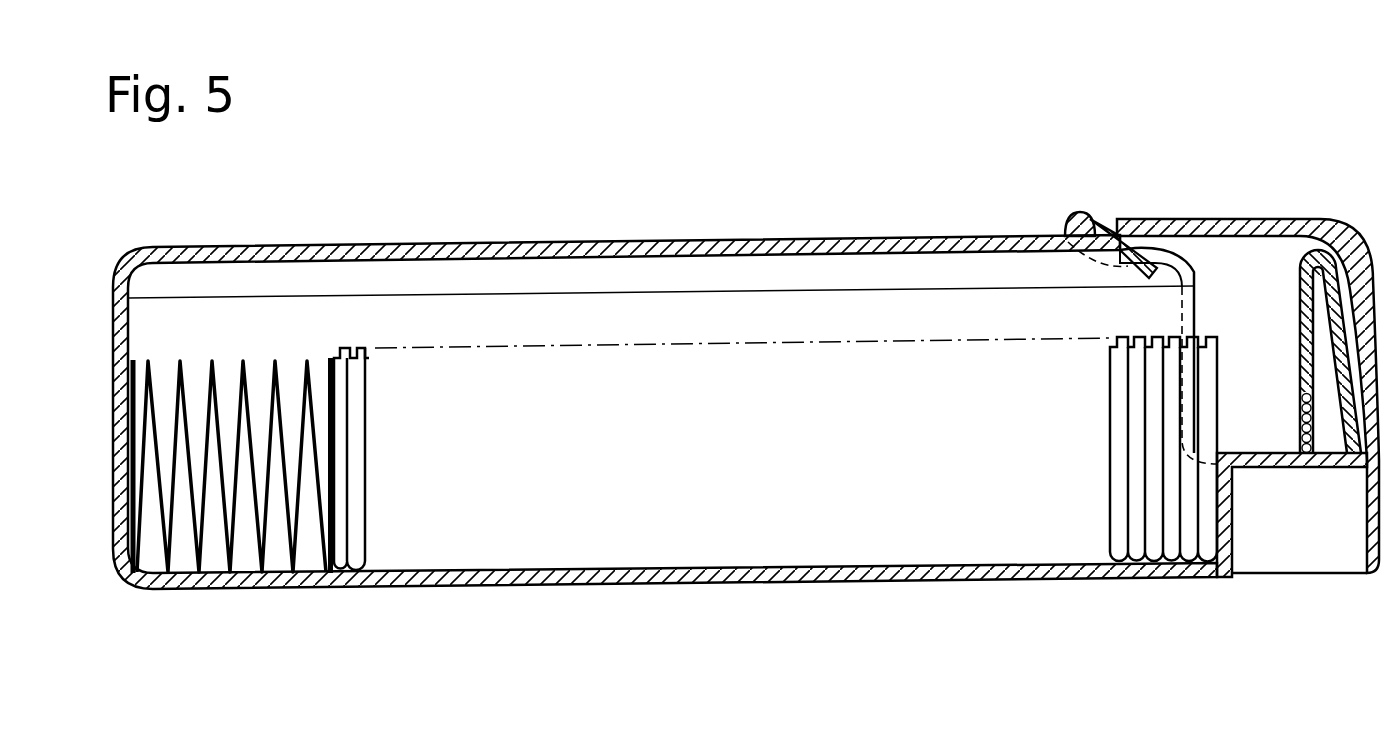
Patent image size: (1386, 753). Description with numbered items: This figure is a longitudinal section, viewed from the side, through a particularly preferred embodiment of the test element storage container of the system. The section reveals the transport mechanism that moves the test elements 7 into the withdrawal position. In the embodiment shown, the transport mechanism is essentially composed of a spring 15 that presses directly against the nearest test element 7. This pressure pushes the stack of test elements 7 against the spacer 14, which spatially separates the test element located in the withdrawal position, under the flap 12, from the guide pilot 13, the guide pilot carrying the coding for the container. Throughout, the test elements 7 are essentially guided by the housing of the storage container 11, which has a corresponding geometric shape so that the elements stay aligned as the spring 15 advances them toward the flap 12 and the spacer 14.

The test element with edge profile 7 is at (363, 533).
The housing of the storage container 11 is at (911, 243).
The flap 12 is at (1224, 223).
The guide pilot with coding 13 is at (1309, 306).
The spacer 14 is at (1273, 462).
The spring 15 is at (232, 556).